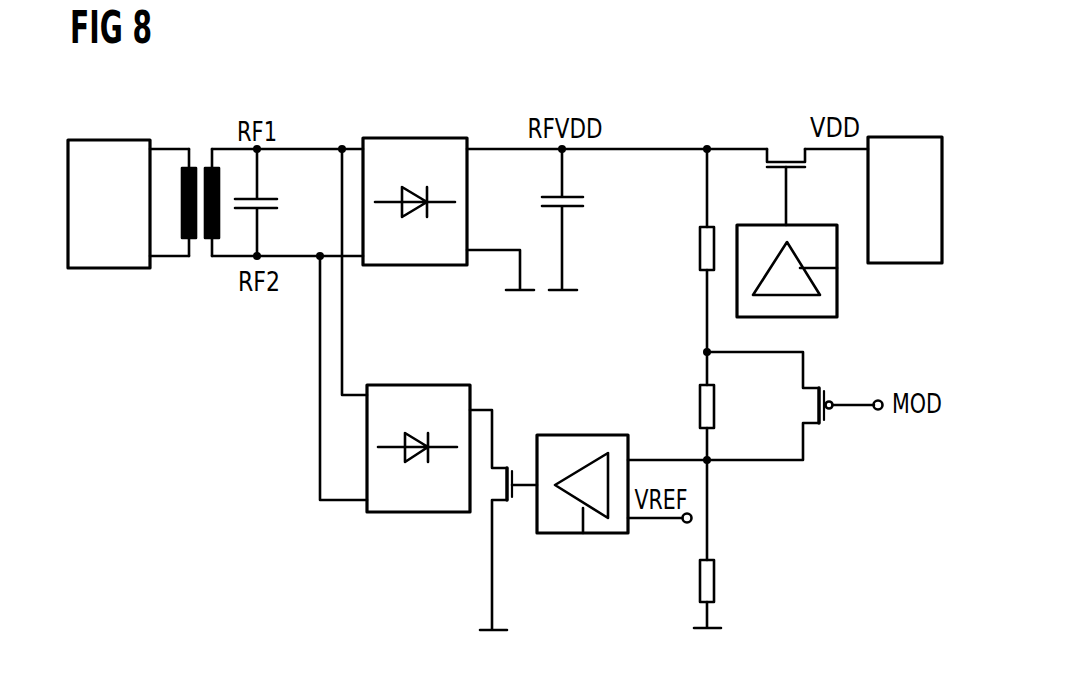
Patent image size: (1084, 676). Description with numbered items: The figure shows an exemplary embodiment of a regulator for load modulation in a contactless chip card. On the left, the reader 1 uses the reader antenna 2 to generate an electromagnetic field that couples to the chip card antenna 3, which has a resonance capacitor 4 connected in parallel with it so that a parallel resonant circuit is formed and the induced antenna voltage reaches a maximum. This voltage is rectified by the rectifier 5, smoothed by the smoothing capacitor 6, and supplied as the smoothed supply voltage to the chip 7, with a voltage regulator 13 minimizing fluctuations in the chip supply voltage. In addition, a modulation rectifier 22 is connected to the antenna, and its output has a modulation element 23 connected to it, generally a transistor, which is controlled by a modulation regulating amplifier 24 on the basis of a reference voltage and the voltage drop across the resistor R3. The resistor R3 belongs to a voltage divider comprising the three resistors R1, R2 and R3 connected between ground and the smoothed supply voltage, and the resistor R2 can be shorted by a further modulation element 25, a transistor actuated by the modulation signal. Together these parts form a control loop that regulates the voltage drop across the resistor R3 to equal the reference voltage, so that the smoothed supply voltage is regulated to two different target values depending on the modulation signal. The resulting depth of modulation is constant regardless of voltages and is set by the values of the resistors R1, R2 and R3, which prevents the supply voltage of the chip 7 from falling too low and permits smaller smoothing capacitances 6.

The reader 1 is at (108, 140).
The reader antenna 2 is at (188, 187).
The chip card antenna 3 is at (216, 187).
The resonance capacitor 4 is at (277, 203).
The rectifier 5 is at (398, 138).
The smoothing capacitor 6 is at (583, 203).
The chip 7 is at (910, 137).
The voltage regulator 13 is at (837, 283).
The modulation rectifier 22 is at (398, 385).
The modulation element 23 is at (507, 466).
The modulation regulating amplifier 24 is at (582, 435).
The further modulation element 25 is at (822, 422).
The resistor R1 is at (700, 250).
The resistor R2 is at (715, 412).
The resistor R3 is at (715, 578).